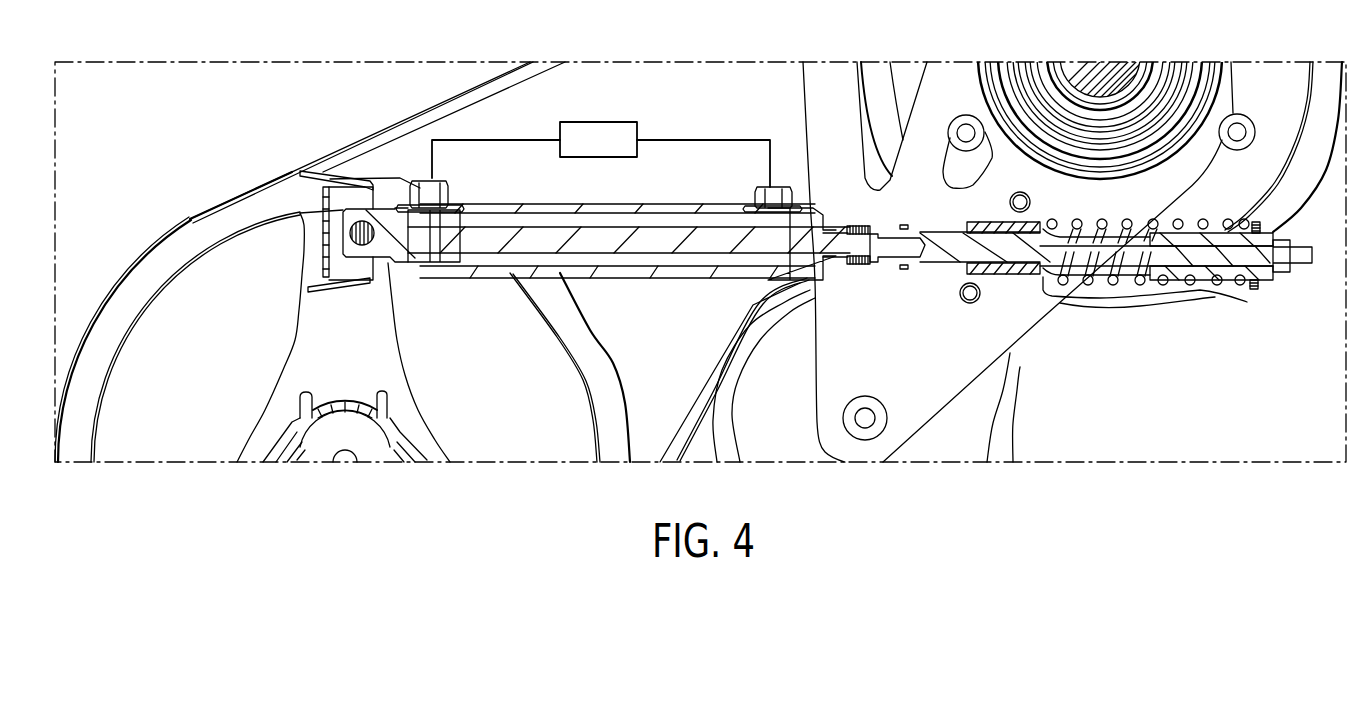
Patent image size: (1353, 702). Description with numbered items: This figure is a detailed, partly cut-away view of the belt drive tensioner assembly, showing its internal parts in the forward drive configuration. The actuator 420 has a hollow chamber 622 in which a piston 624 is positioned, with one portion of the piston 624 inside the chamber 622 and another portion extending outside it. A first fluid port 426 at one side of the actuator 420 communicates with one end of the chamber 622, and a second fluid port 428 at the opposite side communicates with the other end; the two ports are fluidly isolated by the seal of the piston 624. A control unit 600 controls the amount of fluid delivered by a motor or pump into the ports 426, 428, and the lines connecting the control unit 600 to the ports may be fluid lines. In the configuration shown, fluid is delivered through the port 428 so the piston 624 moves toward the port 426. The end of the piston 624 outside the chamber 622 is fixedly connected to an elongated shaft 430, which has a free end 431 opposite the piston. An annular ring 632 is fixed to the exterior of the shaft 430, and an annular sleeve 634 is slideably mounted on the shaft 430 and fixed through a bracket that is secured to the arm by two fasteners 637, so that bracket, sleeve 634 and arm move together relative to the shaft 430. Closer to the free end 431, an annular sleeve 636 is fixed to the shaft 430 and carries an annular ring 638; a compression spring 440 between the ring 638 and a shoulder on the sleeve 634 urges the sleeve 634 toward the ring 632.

The actuator 420 is at (629, 297).
The first fluid port 426 is at (434, 180).
The second fluid port 428 is at (772, 186).
The elongated shaft 430 is at (1251, 242).
The second free end 431 is at (1302, 266).
The compression spring 440 is at (1140, 258).
The control unit 600 is at (621, 151).
The hollow chamber 622 is at (644, 270).
The piston 624 is at (500, 238).
The annular ring 632 is at (903, 268).
The annular sleeve 634 is at (1010, 282).
The annular sleeve 636 is at (1203, 275).
The fasteners 637 is at (970, 303).
The annular ring 638 is at (1253, 286).